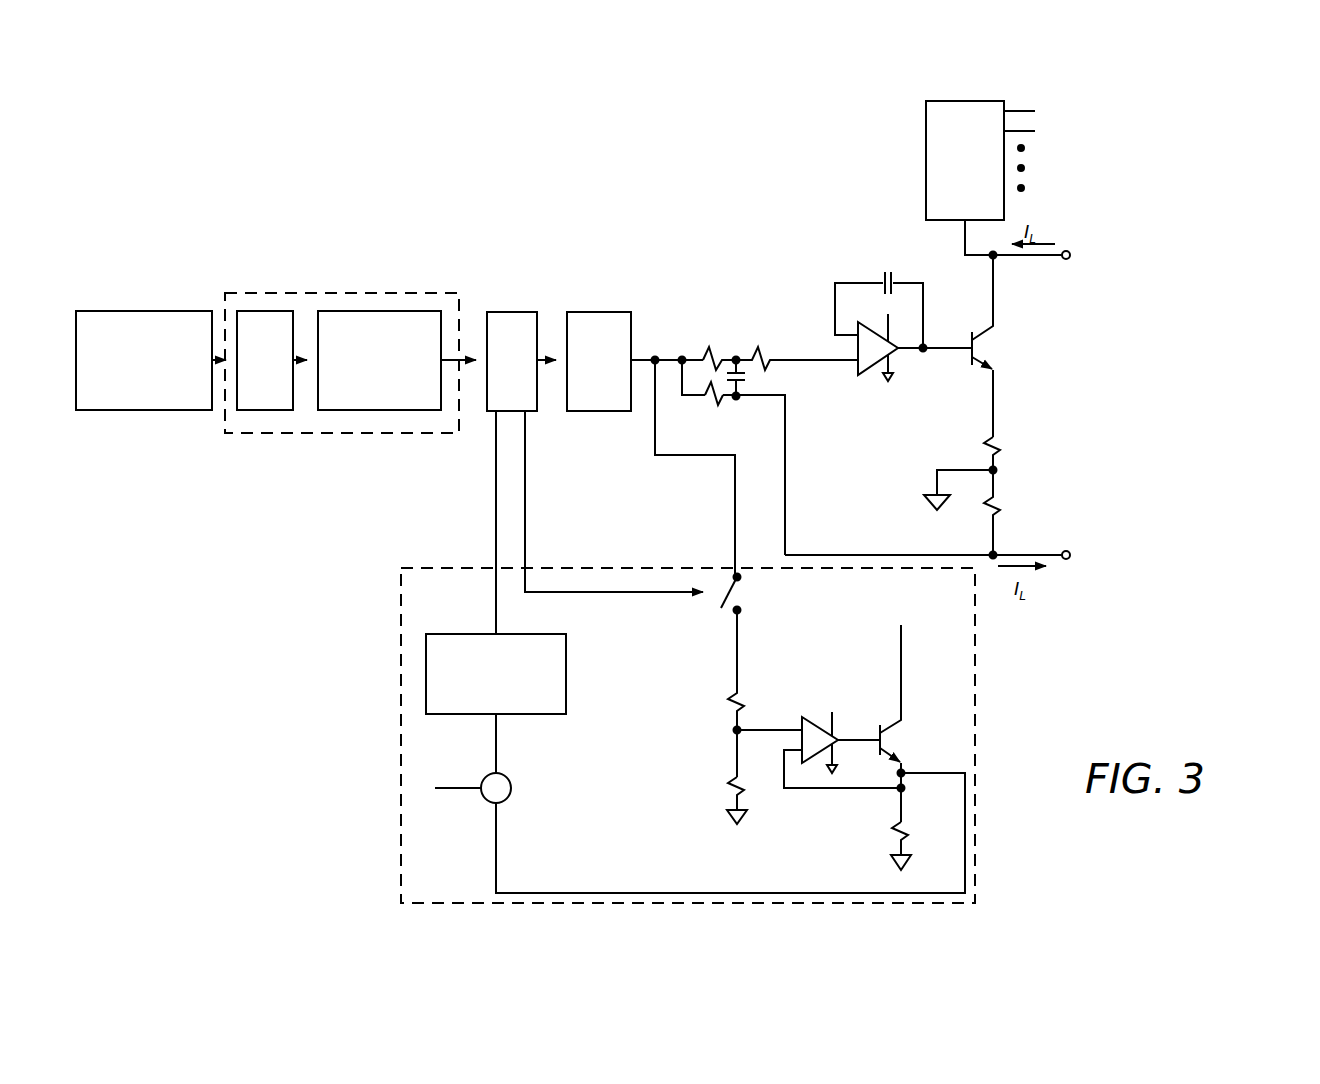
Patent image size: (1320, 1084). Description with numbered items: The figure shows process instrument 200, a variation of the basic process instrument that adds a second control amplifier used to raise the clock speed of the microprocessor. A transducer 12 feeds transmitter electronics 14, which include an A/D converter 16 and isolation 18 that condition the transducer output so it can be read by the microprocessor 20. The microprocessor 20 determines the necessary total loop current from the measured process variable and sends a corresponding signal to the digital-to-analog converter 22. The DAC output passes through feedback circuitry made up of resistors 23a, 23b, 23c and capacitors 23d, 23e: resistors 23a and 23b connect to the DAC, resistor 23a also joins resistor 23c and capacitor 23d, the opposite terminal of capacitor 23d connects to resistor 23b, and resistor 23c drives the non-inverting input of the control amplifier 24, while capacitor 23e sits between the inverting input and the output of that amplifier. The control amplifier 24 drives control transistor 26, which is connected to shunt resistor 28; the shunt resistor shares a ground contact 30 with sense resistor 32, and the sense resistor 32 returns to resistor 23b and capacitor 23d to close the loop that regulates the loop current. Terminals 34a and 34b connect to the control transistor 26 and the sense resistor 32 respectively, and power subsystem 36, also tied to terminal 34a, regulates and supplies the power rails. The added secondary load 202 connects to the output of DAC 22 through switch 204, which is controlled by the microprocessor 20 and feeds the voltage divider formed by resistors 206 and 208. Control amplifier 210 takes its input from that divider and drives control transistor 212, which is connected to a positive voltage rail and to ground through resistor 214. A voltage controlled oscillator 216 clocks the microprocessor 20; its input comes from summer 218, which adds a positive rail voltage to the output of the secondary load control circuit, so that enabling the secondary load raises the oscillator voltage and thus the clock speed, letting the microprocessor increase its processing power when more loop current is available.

The transducer 12 is at (150, 311).
The transmitter electronics 14 is at (340, 293).
The A/D converter 16 is at (272, 411).
The isolation 18 is at (398, 411).
The microprocessor 20 is at (517, 312).
The digital-to-analog converter 22 is at (583, 312).
The resistor 23a is at (710, 350).
The resistor 23b is at (716, 403).
The resistor 23c is at (757, 350).
The capacitor 23d is at (750, 384).
The capacitor 23e is at (892, 270).
The control amplifier 24 is at (906, 357).
The control transistor 26 is at (998, 347).
The shunt resistor 28 is at (1000, 438).
The ground contact 30 is at (930, 498).
The sense resistor 32 is at (1000, 498).
The terminal 34a is at (1069, 258).
The terminal 34b is at (1070, 553).
The power subsystem 36 is at (926, 116).
The process instrument 200 is at (1200, 226).
The secondary load 202 is at (398, 693).
The switch 204 is at (753, 595).
The resistor 206 is at (742, 696).
The resistor 208 is at (742, 778).
The control amplifier 210 is at (808, 706).
The control transistor 212 is at (906, 737).
The resistor 214 is at (905, 823).
The voltage controlled oscillator 216 is at (566, 672).
The summer 218 is at (512, 790).